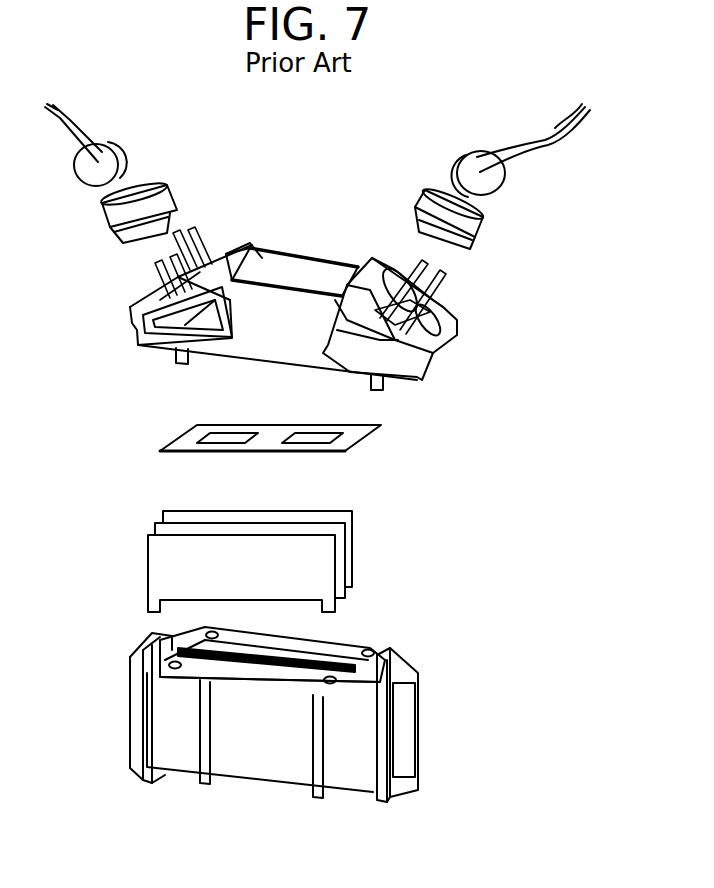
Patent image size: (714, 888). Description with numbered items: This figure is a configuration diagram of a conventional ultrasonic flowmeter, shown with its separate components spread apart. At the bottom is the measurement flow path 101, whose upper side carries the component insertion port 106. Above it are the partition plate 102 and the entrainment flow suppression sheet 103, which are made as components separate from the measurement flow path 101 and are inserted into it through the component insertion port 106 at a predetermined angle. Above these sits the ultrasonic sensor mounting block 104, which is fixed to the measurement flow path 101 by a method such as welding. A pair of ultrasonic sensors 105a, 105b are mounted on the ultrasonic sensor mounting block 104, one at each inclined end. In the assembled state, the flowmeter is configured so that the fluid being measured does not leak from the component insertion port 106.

The measurement flow path 101 is at (410, 748).
The partition plate 102 is at (352, 527).
The entrainment flow suppression sheet 103 is at (165, 438).
The ultrasonic sensor mounting block 104 is at (303, 257).
The ultrasonic sensor 105a is at (507, 187).
The ultrasonic sensor 105b is at (130, 150).
The component insertion port 106 is at (378, 652).